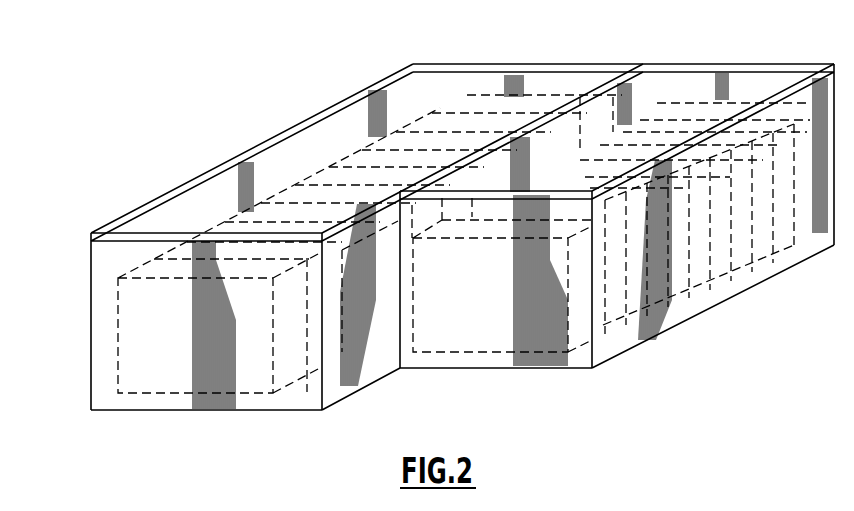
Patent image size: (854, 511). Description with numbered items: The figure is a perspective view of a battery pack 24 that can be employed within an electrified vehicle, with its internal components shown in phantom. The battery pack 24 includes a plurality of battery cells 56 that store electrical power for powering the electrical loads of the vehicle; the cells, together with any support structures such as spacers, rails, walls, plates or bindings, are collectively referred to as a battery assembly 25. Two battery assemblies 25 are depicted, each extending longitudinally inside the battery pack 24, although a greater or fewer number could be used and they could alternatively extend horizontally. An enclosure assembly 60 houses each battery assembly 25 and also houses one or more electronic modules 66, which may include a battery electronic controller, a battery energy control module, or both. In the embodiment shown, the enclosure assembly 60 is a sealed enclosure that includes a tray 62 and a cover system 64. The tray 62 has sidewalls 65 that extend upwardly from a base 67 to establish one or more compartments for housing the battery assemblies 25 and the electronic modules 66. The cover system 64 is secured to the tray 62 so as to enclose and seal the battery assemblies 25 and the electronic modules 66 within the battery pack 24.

The battery pack 24 is at (172, 130).
The battery assembly 25 is at (175, 352).
The battery cells 56 is at (348, 158).
The enclosure assembly 60 is at (86, 226).
The tray 62 is at (84, 384).
The cover system 64 is at (643, 60).
The sidewalls 65 is at (357, 90).
The electronic modules 66 is at (499, 340).
The base 67 is at (288, 410).